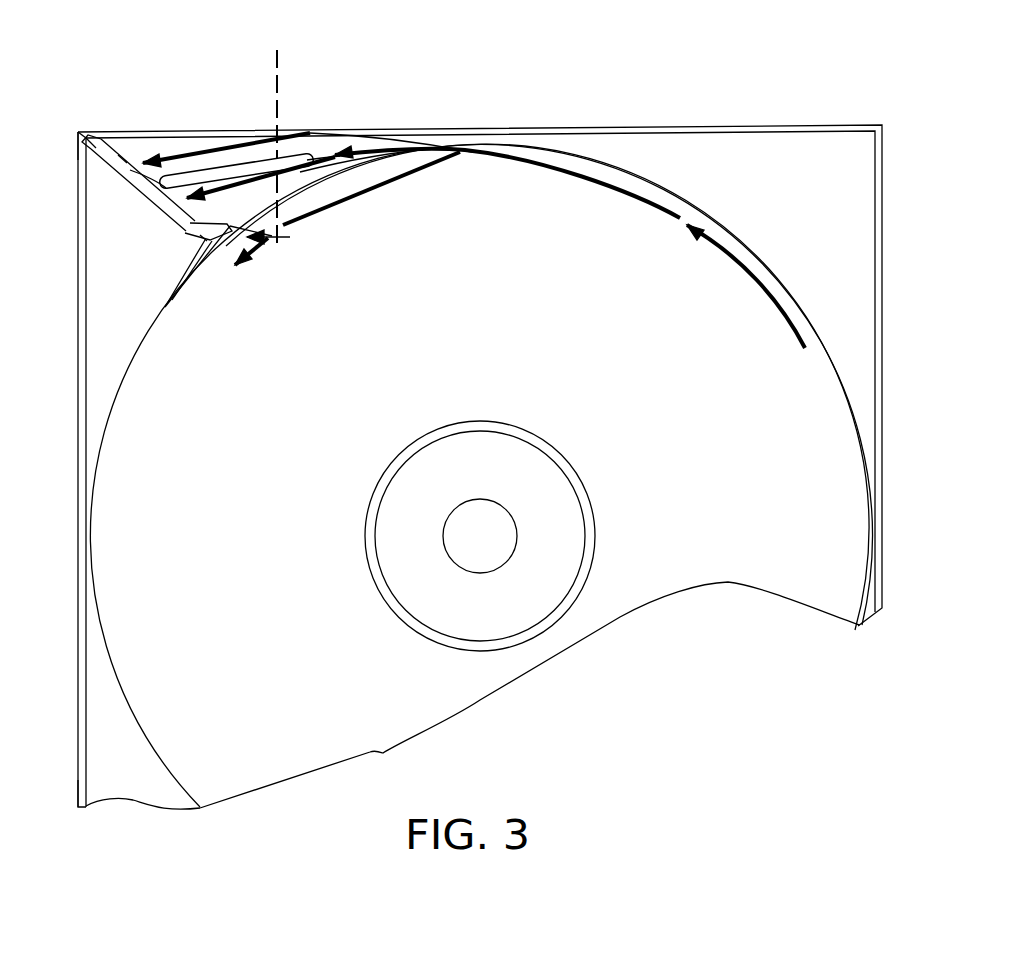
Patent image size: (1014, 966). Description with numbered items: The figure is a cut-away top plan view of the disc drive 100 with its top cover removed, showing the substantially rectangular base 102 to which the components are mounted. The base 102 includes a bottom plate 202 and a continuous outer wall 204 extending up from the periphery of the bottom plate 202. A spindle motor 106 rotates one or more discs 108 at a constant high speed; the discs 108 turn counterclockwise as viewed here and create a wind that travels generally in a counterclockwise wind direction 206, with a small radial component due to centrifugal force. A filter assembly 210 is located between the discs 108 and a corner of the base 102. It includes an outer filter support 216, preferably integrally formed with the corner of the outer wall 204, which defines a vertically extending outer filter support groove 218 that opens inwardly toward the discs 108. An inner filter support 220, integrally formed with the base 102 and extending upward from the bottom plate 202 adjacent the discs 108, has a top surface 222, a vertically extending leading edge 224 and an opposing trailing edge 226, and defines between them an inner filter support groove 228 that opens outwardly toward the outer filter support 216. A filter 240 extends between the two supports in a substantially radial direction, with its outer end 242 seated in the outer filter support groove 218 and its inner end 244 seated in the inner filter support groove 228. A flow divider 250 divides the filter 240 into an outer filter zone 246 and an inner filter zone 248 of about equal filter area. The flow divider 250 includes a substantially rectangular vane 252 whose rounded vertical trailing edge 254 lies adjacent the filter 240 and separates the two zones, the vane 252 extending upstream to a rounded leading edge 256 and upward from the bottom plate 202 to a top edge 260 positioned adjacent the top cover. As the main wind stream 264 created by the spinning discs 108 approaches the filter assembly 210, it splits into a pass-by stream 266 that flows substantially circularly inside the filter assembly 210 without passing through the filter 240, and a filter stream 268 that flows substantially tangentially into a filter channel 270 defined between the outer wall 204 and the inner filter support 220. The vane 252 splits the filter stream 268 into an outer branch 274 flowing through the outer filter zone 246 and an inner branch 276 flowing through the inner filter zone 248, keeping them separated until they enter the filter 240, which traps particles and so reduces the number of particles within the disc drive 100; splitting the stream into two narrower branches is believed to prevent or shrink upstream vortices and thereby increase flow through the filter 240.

The disc drive 100 is at (643, 757).
The base 102 is at (170, 842).
The spindle motor 106 is at (563, 507).
The disc 108 is at (717, 553).
The bottom plate 202 is at (152, 787).
The outer wall 204 is at (82, 808).
The wind direction 206 is at (727, 255).
The filter assembly 210 is at (135, 78).
The outer filter support 216 is at (93, 120).
The outer filter support groove 218 is at (88, 130).
The inner filter support 220 is at (156, 287).
The top surface 222 is at (180, 270).
The leading edge 224 is at (258, 278).
The trailing edge 226 is at (172, 308).
The inner filter support groove 228 is at (208, 252).
The filter 240 is at (107, 235).
The outer end 242 is at (88, 150).
The inner end 244 is at (200, 232).
The outer filter zone 246 is at (118, 170).
The inner filter zone 248 is at (207, 233).
The flow divider 250 is at (340, 94).
The vane 252 is at (262, 146).
The trailing edge 254 is at (160, 152).
The leading edge 256 is at (333, 154).
The top edge 260 is at (213, 153).
The main wind stream 264 is at (537, 165).
The pass-by stream 266 is at (352, 200).
The filter stream 268 is at (432, 152).
The filter channel 270 is at (366, 152).
The outer branch 274 is at (290, 65).
The inner branch 276 is at (297, 183).